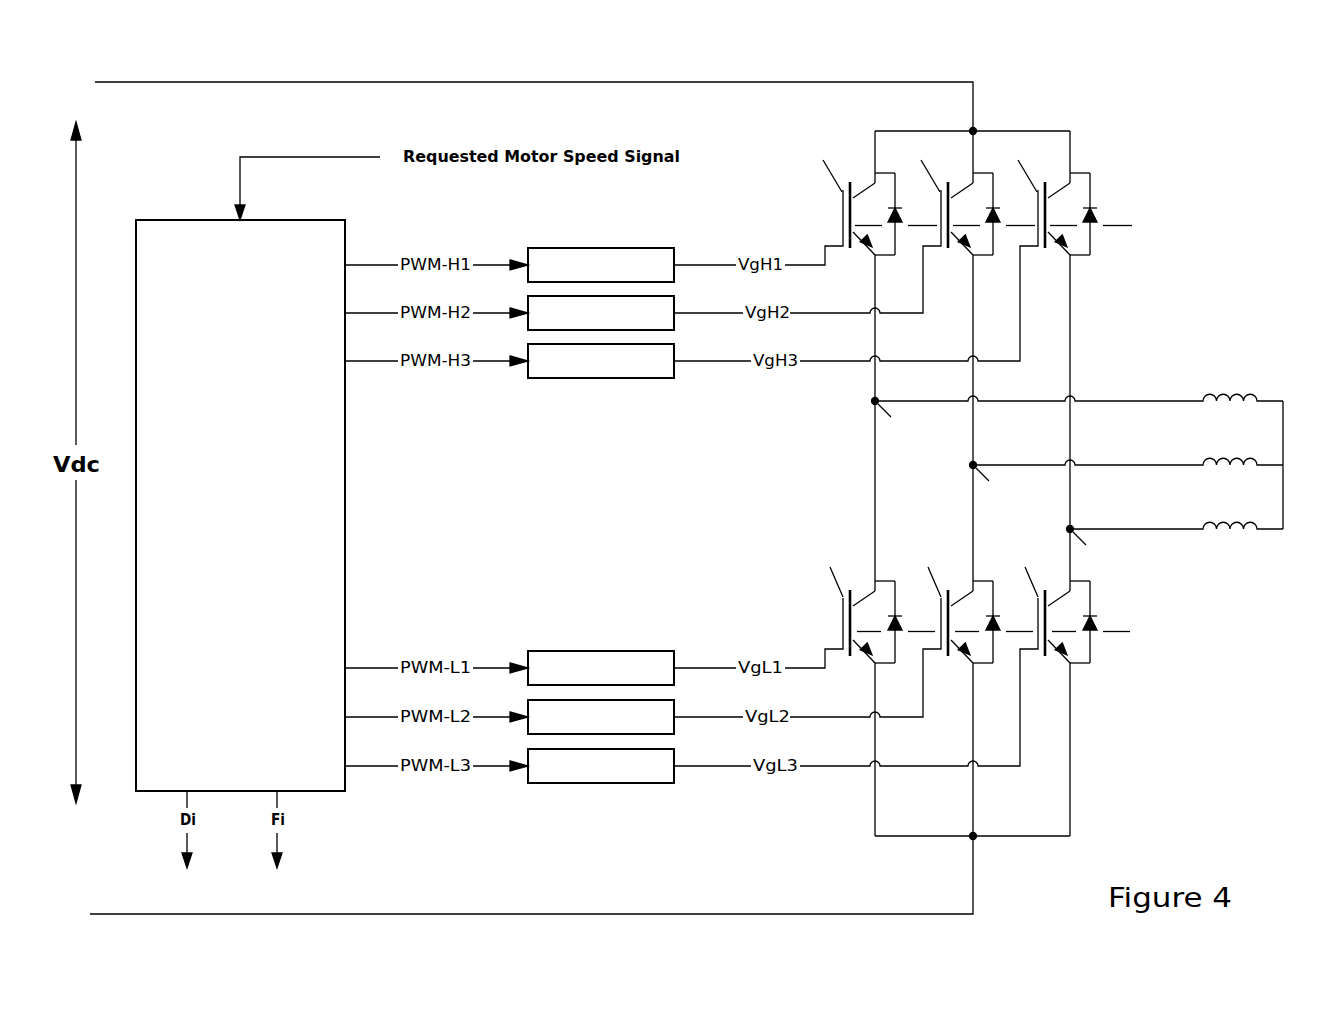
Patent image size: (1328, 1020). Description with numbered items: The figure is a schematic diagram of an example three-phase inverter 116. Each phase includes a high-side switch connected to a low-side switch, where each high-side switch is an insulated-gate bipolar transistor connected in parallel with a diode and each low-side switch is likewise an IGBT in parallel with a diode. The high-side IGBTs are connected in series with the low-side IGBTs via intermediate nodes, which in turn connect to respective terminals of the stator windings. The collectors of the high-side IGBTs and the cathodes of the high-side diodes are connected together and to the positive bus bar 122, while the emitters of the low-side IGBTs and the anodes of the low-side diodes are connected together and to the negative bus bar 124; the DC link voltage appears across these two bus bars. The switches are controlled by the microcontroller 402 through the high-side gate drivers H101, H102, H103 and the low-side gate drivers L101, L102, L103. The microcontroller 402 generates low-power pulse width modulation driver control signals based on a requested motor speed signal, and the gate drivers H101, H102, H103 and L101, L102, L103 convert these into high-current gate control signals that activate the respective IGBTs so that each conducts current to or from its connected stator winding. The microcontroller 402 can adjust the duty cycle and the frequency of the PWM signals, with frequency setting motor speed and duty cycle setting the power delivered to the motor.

The three-phase inverter 116 is at (635, 21).
The V+ bus bar 122 is at (168, 80).
The V− bus bar 124 is at (332, 912).
The microcontroller 402 is at (262, 530).
The high-side gate driver H101 is at (618, 273).
The high-side gate driver H102 is at (618, 321).
The high-side gate driver H103 is at (618, 369).
The low-side gate driver L101 is at (618, 676).
The low-side gate driver L102 is at (618, 725).
The low-side gate driver L103 is at (618, 774).